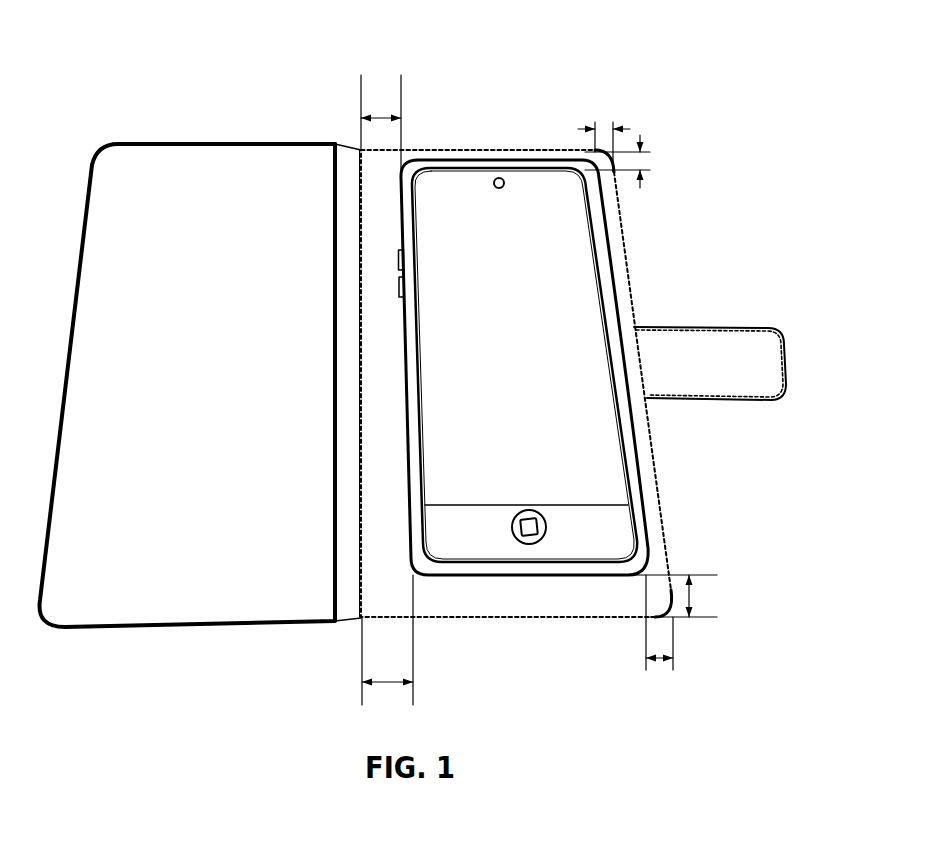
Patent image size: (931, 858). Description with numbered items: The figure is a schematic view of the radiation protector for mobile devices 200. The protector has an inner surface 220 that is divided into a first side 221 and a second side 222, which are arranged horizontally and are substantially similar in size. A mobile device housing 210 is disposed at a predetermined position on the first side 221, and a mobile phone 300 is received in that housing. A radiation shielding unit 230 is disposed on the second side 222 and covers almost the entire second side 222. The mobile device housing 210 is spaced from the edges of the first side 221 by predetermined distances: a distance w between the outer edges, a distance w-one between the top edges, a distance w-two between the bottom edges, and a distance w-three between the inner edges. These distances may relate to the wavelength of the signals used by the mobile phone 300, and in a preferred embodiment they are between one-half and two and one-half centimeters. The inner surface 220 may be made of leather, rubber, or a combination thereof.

The radiation protector for mobile devices 200 is at (176, 50).
The mobile device housing 210 is at (635, 488).
The inner surface 220 is at (347, 130).
The first side 221 is at (635, 437).
The second side 222 is at (117, 653).
The radiation shielding unit 230 is at (203, 167).
The mobile phone 300 is at (568, 268).